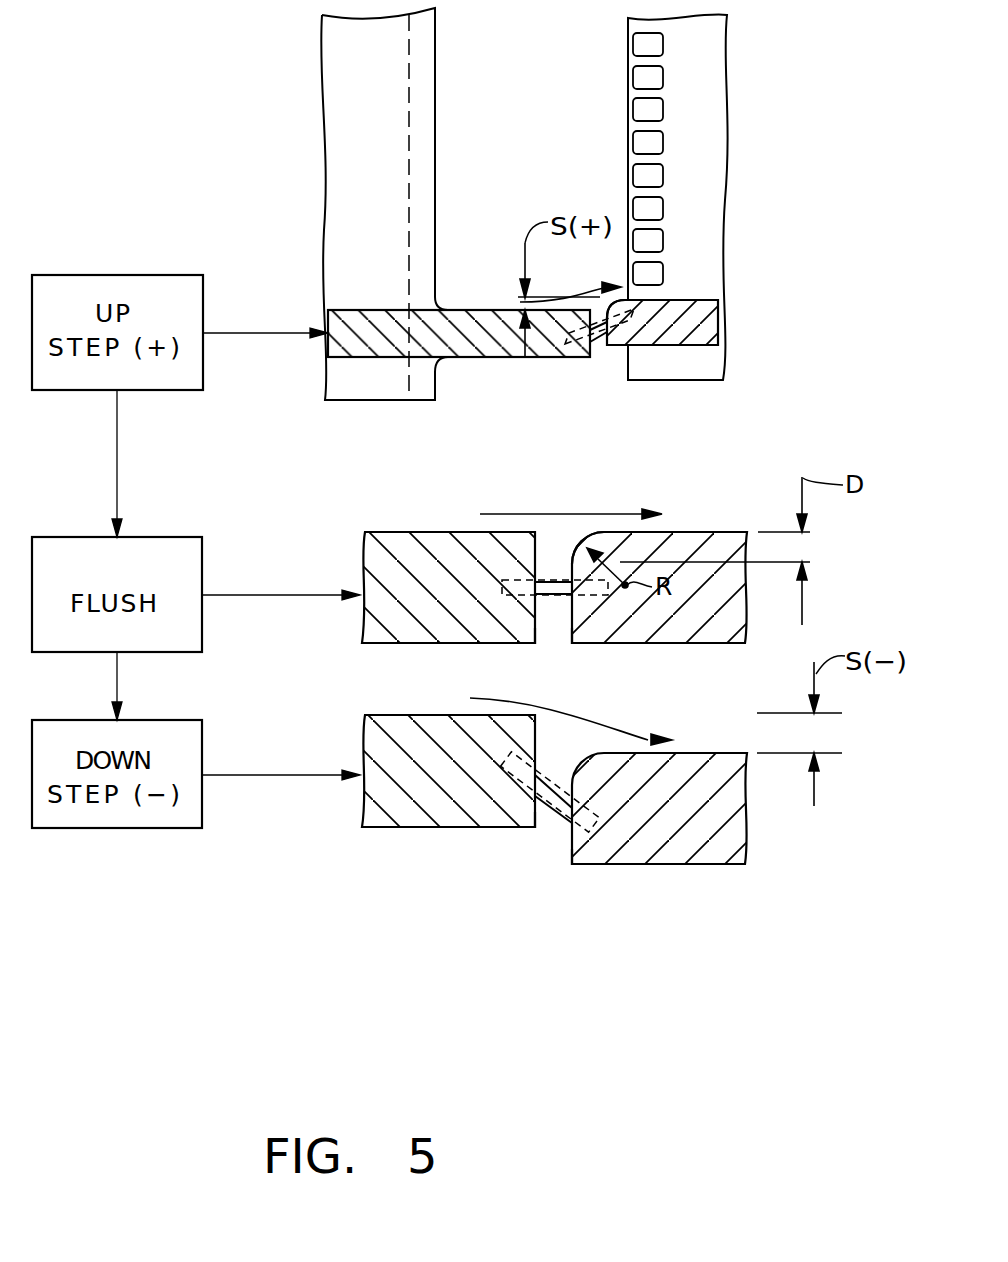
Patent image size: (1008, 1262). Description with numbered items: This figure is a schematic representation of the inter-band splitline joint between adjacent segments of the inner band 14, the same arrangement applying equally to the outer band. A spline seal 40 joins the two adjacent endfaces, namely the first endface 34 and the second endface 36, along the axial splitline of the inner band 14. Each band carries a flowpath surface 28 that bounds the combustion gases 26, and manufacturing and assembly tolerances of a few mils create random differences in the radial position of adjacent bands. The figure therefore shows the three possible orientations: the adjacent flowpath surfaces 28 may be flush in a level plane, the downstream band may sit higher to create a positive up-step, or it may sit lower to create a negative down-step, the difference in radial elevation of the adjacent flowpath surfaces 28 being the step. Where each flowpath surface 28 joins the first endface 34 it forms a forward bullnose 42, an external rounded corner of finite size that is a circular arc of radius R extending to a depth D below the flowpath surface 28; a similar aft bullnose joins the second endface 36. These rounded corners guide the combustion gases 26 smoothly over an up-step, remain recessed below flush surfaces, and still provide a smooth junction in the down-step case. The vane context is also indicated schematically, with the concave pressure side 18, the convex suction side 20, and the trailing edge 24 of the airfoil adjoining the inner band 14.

The inner band 14 is at (363, 362).
The pressure side 18 is at (711, 151).
The suction side 20 is at (383, 178).
The trailing edge 24 is at (628, 45).
The combustion gases 26 is at (540, 514).
The flowpath surfaces 28 is at (483, 310).
The first endface 34 is at (572, 640).
The second endface 36 is at (537, 640).
The spline seal 40 is at (596, 338).
The forward bullnose 42 is at (616, 302).